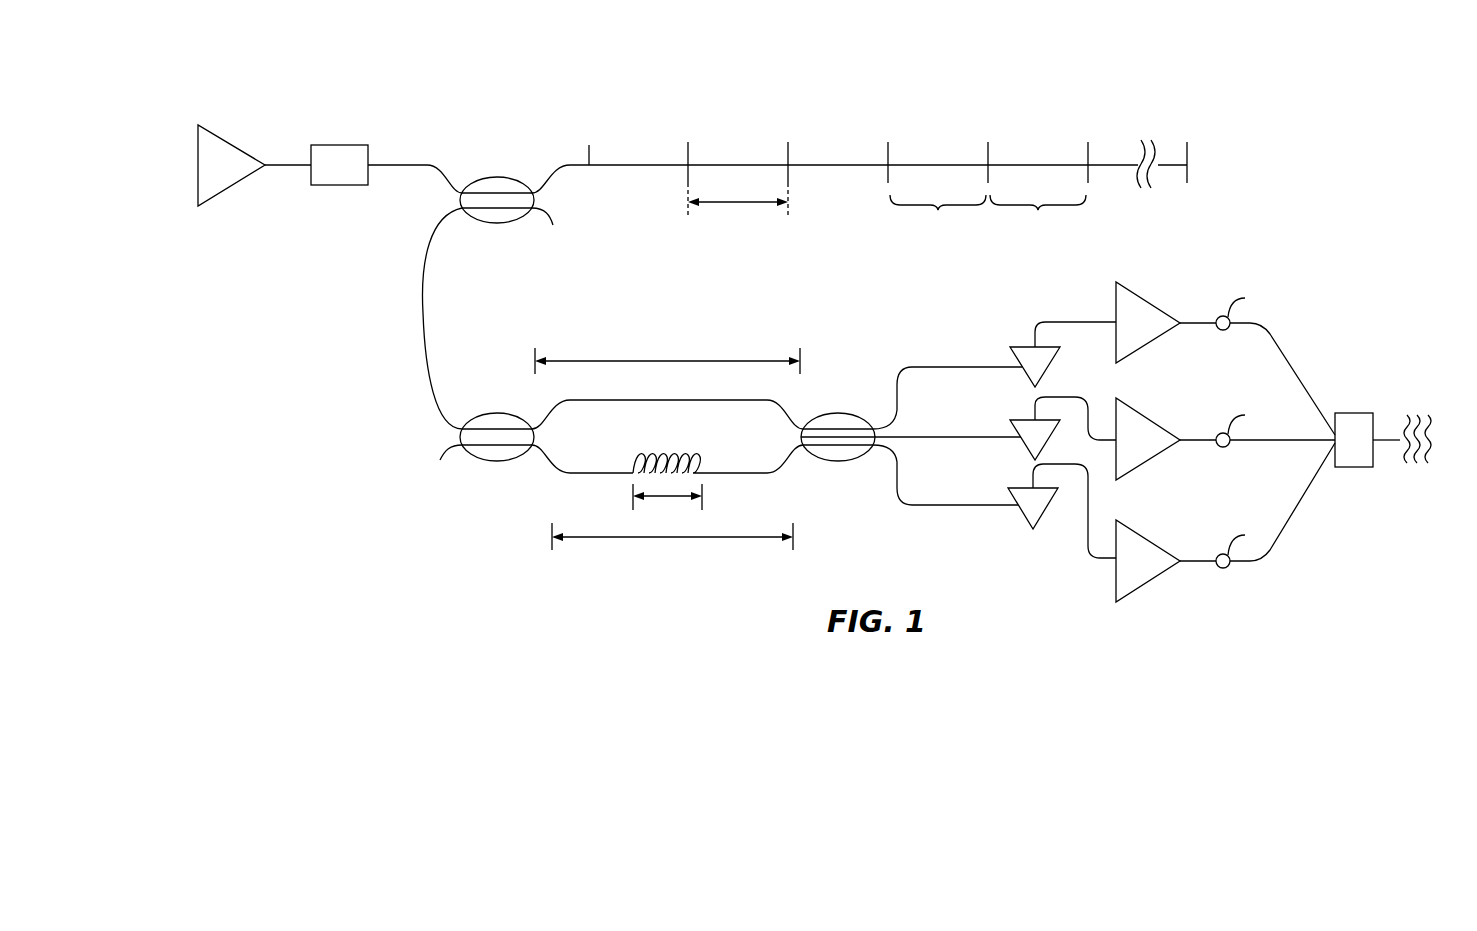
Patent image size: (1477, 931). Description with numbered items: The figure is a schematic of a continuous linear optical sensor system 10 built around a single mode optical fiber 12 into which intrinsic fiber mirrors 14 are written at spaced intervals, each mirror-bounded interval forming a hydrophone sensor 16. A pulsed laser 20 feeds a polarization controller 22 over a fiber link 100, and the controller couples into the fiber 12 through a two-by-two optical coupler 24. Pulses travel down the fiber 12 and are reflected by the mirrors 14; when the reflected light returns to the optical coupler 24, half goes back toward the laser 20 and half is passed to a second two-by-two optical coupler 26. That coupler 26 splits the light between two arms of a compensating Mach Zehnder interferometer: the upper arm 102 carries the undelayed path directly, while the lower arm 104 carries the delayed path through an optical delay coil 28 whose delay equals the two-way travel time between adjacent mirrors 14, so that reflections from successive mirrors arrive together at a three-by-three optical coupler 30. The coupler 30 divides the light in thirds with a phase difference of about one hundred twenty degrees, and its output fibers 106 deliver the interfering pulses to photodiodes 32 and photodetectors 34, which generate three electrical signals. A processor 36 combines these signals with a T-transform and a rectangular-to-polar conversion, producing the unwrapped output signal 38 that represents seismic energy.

The sensor system 10 is at (1112, 34).
The single mode optical fiber 12 is at (592, 158).
The intrinsic fiber mirrors 14 is at (688, 112).
The hydrophone sensors 16 is at (988, 219).
The pulsed laser 20 is at (225, 141).
The polarization controller 22 is at (350, 186).
The optical coupler 24 is at (502, 178).
The optical coupler 26 is at (513, 400).
The optical delay coil 28 is at (665, 453).
The optical coupler 30 is at (838, 461).
The photodiodes 32 is at (1030, 346).
The photodetectors 34 is at (1148, 303).
The processor 36 is at (1355, 413).
The resulting signal 38 is at (1422, 415).
The fiber link from source 100 is at (268, 163).
The pulse 102 is at (793, 425).
The pulse 104 is at (792, 447).
The interfering pulses 106 is at (1020, 366).